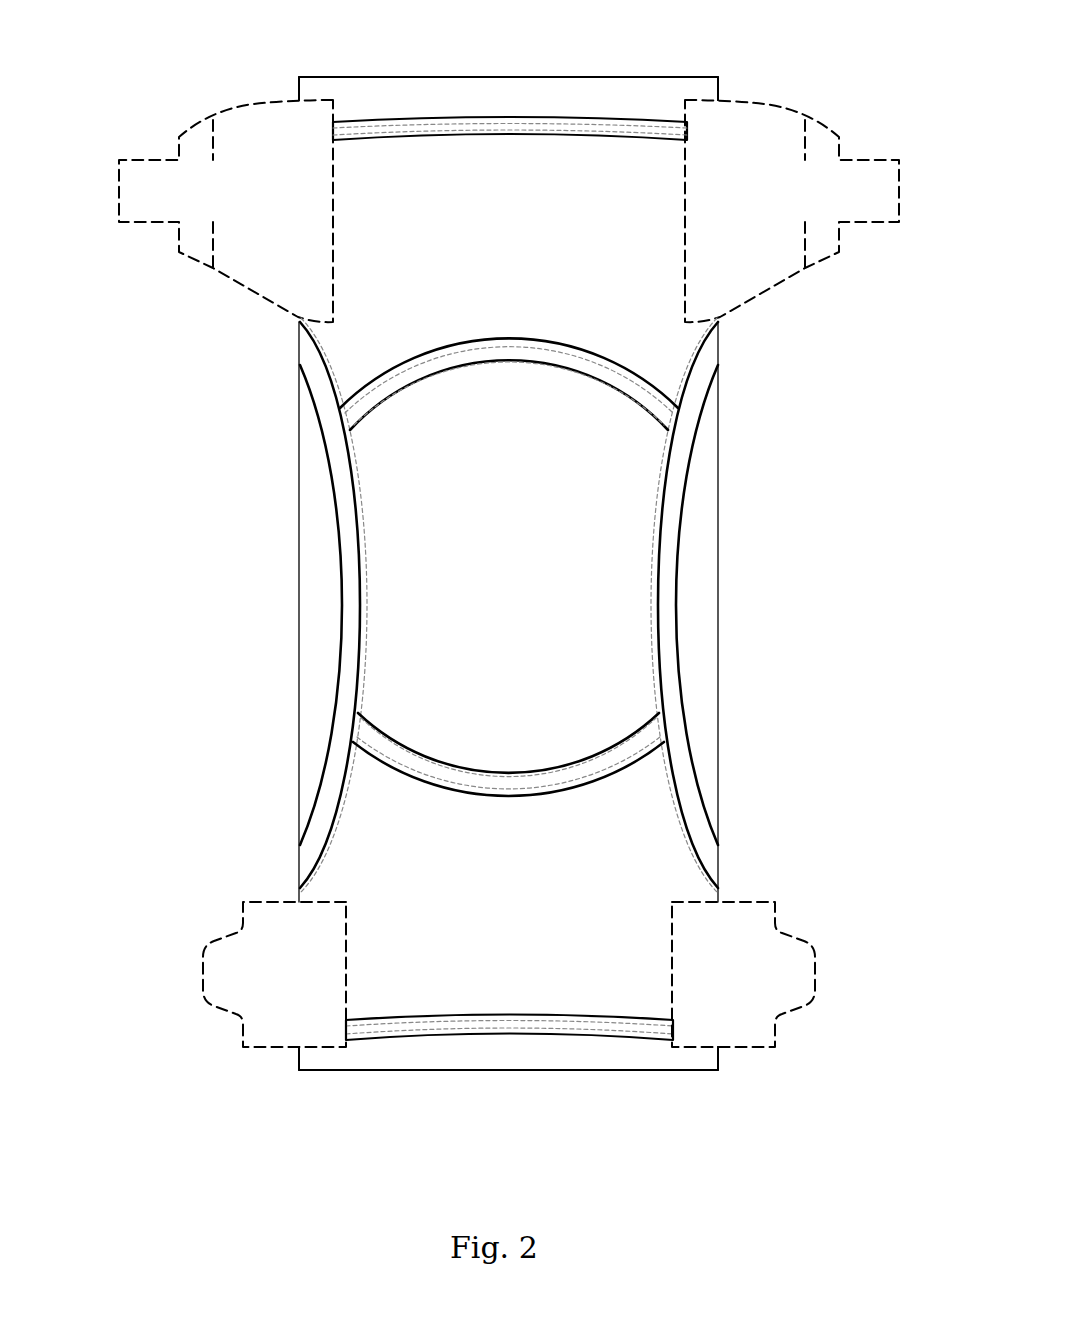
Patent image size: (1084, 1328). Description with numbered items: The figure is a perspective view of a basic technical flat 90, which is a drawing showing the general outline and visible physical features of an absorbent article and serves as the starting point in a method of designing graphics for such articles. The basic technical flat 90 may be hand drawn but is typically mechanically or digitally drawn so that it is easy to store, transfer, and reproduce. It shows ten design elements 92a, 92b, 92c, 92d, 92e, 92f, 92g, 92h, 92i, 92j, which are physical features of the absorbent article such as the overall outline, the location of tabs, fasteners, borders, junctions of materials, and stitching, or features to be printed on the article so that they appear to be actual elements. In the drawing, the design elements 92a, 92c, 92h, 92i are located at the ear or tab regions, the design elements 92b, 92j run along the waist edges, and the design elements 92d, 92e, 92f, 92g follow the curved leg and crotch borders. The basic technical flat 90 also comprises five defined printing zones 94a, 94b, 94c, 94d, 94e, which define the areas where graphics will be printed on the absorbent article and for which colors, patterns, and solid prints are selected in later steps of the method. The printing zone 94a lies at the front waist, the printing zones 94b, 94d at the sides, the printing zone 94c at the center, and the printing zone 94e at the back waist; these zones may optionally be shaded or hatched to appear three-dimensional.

The basic technical flat 90 is at (172, 681).
The design element 92a is at (257, 112).
The design element 92b is at (505, 128).
The design element 92c is at (773, 110).
The design element 92d is at (433, 362).
The design element 92e is at (333, 435).
The design element 92f is at (687, 440).
The design element 92g is at (452, 775).
The design element 92h is at (212, 994).
The design element 92i is at (807, 994).
The design element 92j is at (460, 1023).
The printing zone 94a is at (528, 240).
The printing zone 94b is at (321, 556).
The printing zone 94c is at (531, 573).
The printing zone 94d is at (705, 558).
The printing zone 94e is at (528, 923).